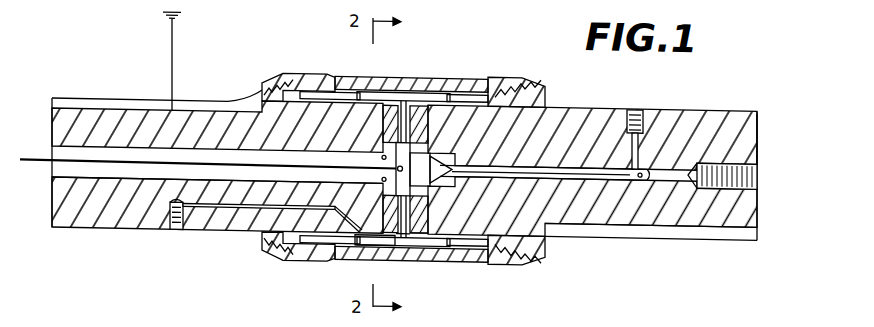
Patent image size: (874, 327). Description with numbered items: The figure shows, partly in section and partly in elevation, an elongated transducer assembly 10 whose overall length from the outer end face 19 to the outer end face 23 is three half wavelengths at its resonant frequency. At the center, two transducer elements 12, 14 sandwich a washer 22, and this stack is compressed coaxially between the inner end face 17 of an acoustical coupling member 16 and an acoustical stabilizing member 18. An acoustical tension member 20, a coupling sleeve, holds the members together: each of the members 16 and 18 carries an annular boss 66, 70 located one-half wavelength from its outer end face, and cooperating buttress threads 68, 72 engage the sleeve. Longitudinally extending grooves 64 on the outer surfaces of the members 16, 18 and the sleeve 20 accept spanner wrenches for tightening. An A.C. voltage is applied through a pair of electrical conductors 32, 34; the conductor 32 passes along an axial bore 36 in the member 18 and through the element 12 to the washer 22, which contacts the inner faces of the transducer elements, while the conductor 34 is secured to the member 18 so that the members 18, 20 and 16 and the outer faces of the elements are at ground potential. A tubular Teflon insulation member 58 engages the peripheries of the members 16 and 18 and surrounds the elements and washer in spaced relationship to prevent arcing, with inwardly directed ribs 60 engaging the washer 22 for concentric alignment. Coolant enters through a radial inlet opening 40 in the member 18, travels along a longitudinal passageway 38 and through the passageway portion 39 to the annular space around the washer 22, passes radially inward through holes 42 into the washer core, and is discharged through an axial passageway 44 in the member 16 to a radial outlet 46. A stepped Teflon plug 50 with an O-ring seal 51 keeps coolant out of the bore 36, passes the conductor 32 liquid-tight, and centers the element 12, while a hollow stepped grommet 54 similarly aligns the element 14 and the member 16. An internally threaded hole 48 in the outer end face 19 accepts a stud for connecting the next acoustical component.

The transducer assembly 10 is at (150, 69).
The transducer element 12 is at (391, 98).
The transducer element 14 is at (422, 98).
The acoustical coupling member 16 is at (720, 97).
The inner end face 17 is at (420, 226).
The acoustical stabilizing member 18 is at (67, 96).
The outer end face 19 is at (757, 132).
The acoustical tension member 20 is at (467, 70).
The washer 22 is at (401, 93).
The outer end face 23 is at (52, 111).
The electrical conductor 32 is at (20, 157).
The electrical conductor 34 is at (173, 34).
The axial bore 36 is at (68, 171).
The longitudinally extending passageway 38 is at (227, 204).
The passageway portion 39 is at (350, 238).
The inlet opening 40 is at (173, 226).
The radially extending holes 42 is at (402, 228).
The axially extending passageway 44 is at (640, 169).
The outlet 46 is at (637, 98).
The internally threaded hole 48 is at (757, 160).
The stepped plug 50 is at (396, 161).
The O-ring seal 51 is at (381, 173).
The stepped grommet 54 is at (432, 152).
The insulation member 58 is at (410, 93).
The ribs 60 is at (377, 238).
The longitudinally extending grooves 64 is at (297, 67).
The annular boss 66 is at (548, 93).
The buttress threads 68 is at (530, 83).
The annular boss 70 is at (262, 88).
The buttress threads 72 is at (283, 68).